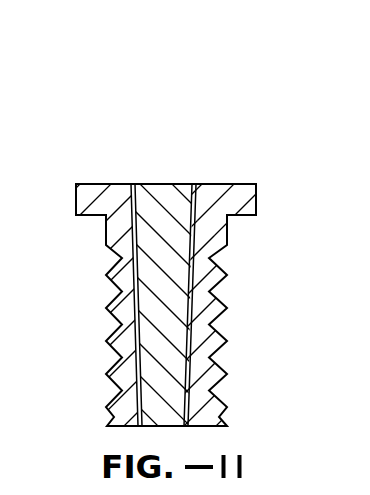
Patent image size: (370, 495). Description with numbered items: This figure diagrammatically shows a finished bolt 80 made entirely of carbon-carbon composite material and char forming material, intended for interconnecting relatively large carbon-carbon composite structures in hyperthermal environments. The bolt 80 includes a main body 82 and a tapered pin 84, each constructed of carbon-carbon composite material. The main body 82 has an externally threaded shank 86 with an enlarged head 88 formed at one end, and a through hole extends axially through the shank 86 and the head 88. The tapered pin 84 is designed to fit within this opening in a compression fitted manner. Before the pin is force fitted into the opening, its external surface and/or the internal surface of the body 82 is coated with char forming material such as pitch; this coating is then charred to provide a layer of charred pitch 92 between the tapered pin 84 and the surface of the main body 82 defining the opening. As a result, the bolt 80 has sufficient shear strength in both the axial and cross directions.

The bolt 80 is at (297, 111).
The main body 82 is at (106, 235).
The tapered pin 84 is at (162, 195).
The externally threaded shank 86 is at (215, 373).
The enlarged head 88 is at (242, 203).
The charred pitch 92 is at (199, 212).